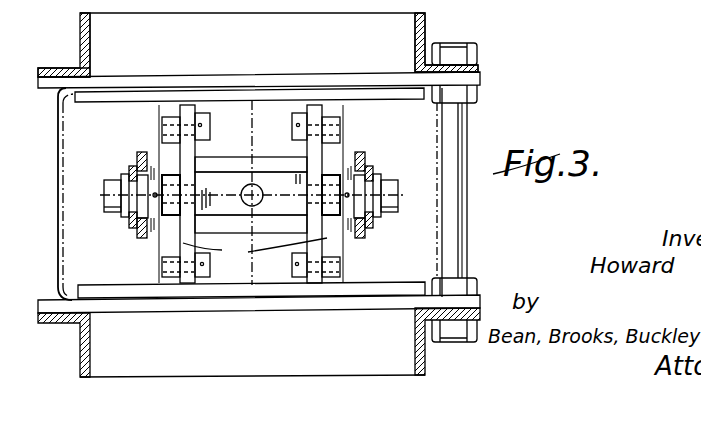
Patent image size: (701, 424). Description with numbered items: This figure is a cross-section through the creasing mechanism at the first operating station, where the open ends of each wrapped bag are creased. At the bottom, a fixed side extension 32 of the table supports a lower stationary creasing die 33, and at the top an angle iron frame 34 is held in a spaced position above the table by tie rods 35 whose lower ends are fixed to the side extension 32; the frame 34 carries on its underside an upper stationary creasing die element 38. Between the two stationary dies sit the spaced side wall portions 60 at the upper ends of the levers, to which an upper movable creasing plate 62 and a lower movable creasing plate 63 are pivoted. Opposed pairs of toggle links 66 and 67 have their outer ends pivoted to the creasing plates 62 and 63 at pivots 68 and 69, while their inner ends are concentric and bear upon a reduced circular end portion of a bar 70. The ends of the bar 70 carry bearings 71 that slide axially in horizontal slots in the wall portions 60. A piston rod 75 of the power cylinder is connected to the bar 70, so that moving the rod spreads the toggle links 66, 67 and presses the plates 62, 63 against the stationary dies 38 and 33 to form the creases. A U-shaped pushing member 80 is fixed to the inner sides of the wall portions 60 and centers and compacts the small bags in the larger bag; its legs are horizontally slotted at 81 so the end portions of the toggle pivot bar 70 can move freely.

The side extension 32 is at (427, 350).
The lower stationary creasing die 33 is at (341, 308).
The angle iron frame 34 is at (422, 30).
The tie rod 35 is at (468, 118).
The upper stationary creasing die element 38 is at (336, 78).
The side wall portion 60 is at (130, 152).
The upper movable creasing plate 62 is at (104, 103).
The lower movable creasing plate 63 is at (92, 297).
The toggle link 66 is at (195, 140).
The toggle link 67 is at (255, 250).
The pivot 68 is at (167, 100).
The pivot 69 is at (168, 298).
The bar 70 is at (212, 181).
The bearing 71 is at (119, 174).
The piston rod 75 is at (263, 193).
The pushing member 80 is at (246, 155).
The slot 81 is at (360, 152).